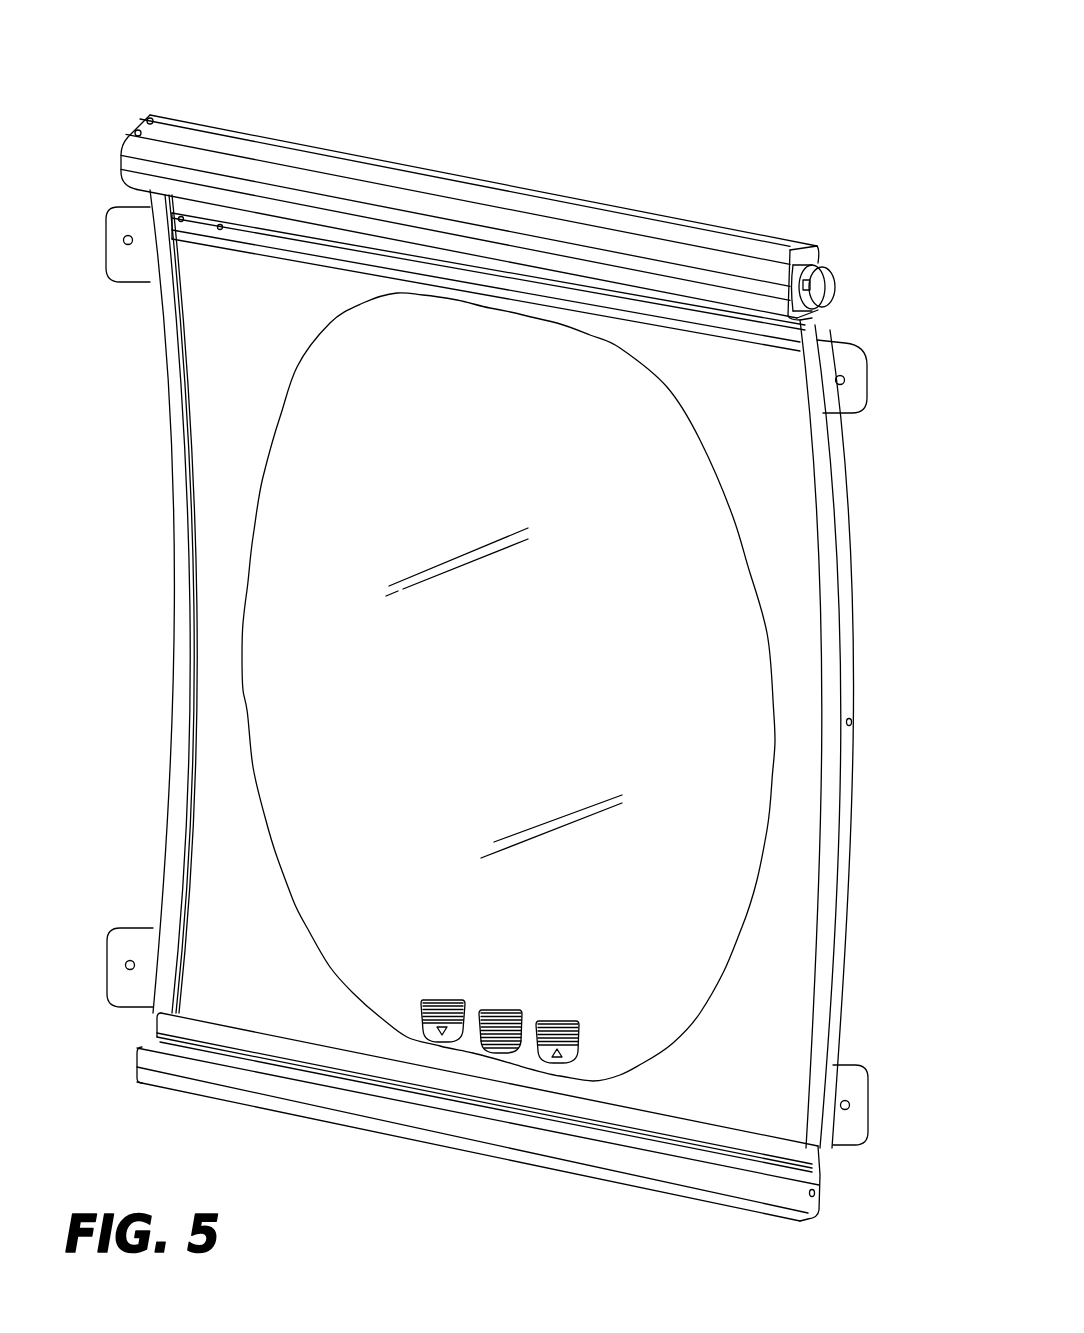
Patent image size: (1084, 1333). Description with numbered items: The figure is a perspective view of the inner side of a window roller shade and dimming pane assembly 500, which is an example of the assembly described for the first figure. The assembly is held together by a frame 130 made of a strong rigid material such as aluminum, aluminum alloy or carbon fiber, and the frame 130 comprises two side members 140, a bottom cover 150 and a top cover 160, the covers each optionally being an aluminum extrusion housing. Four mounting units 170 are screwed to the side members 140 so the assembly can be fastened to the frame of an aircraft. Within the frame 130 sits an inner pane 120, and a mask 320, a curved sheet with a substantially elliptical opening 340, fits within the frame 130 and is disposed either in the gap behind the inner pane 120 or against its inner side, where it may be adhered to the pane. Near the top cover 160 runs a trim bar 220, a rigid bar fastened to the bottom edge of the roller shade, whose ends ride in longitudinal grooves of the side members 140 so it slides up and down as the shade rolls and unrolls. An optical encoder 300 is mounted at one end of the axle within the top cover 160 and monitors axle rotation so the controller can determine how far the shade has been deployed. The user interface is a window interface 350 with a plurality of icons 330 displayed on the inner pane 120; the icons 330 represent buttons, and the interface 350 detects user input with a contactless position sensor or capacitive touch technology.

The window roller shade and dimming pane assembly 500 is at (141, 113).
The inner pane 120 is at (617, 1060).
The frame 130 is at (154, 604).
The side members 140 is at (183, 493).
The bottom cover 150 is at (200, 1083).
The top cover 160 is at (592, 216).
The mounting units 170 is at (117, 223).
The trim bar 220 is at (733, 325).
The optical encoder 300 is at (830, 287).
The mask 320 is at (740, 1113).
The icons 330 is at (553, 1065).
The opening 340 is at (733, 779).
The window interface 350 is at (488, 1025).